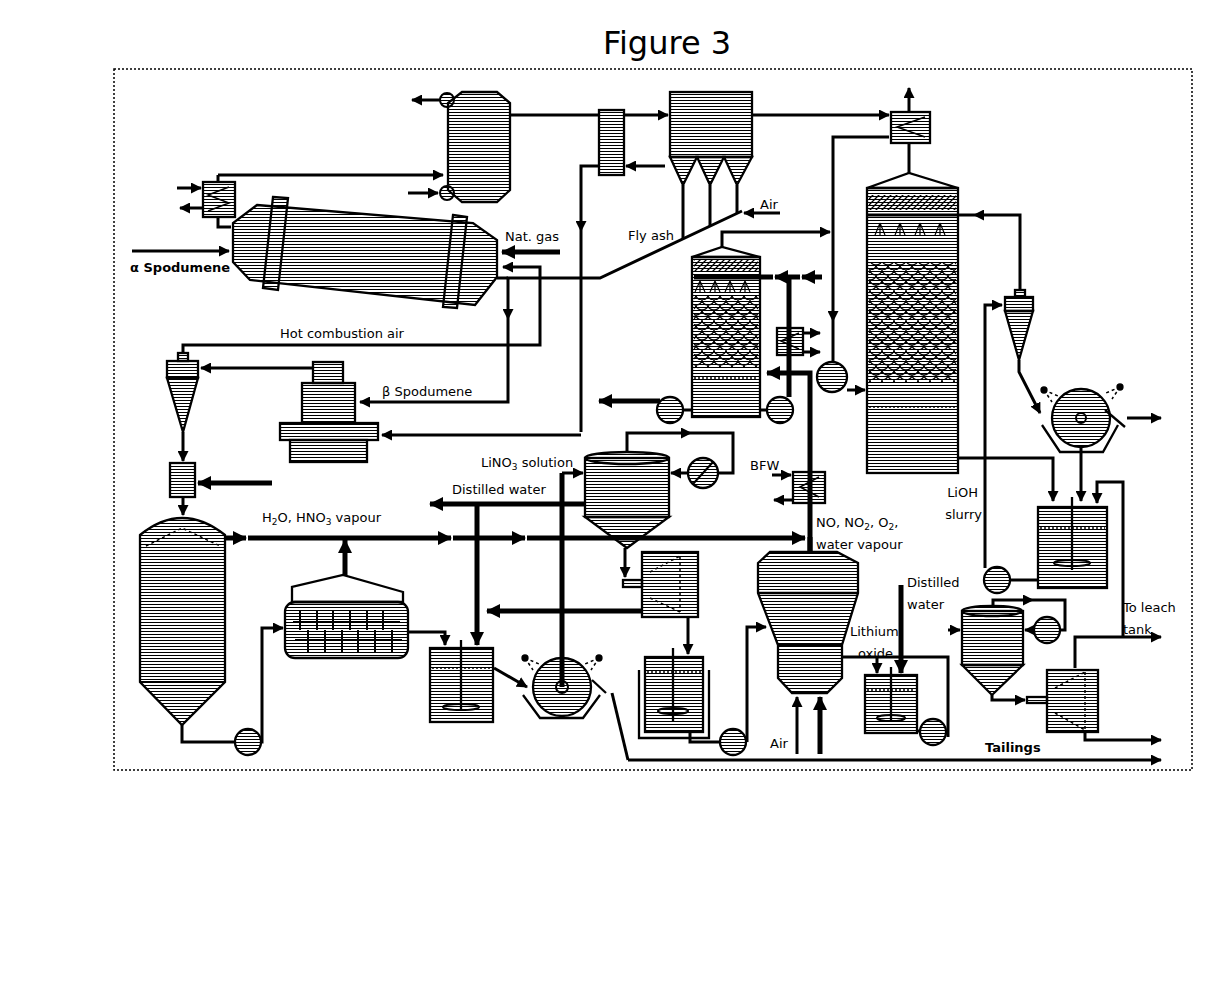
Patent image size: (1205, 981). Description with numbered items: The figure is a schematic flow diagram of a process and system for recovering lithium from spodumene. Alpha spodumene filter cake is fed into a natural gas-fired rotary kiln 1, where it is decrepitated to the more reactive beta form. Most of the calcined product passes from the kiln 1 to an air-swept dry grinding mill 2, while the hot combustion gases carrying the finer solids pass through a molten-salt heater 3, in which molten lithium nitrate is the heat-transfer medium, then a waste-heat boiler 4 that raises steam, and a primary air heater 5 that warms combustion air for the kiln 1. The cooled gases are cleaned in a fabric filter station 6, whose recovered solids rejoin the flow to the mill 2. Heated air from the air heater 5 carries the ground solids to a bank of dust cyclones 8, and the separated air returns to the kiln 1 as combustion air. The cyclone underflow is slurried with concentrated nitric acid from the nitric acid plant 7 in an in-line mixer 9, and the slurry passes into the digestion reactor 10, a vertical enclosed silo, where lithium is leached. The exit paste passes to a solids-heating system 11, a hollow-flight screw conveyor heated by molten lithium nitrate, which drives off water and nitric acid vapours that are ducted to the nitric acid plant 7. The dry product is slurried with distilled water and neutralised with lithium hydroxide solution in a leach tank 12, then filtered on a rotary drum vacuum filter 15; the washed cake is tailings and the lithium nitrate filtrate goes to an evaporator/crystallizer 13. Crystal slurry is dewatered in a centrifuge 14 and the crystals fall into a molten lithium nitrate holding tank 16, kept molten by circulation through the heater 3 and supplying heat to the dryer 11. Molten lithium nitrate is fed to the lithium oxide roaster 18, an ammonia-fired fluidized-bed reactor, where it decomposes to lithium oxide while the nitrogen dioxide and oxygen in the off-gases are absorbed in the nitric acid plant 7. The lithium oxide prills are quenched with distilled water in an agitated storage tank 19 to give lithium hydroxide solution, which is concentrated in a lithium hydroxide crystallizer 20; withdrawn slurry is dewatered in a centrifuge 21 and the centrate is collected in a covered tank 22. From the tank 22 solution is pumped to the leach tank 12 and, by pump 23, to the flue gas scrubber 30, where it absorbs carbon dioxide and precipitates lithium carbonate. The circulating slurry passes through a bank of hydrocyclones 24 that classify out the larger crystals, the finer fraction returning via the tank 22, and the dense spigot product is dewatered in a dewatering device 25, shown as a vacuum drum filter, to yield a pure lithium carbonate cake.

The rotary kiln 1 is at (365, 252).
The air-swept dry grinding mill 2 is at (329, 412).
The molten-salt heater 3 is at (295, 177).
The waste-heat boiler 4 is at (436, 145).
The primary air heater 5 is at (598, 252).
The fabric filter station 6 is at (779, 138).
The nitric acid plant 7 is at (714, 327).
The dust cyclones 8 is at (240, 407).
The in-line mixer 9 is at (197, 482).
The digestion reactor 10 is at (211, 636).
The solids-heating system 11 is at (365, 665).
The mixing/leach tank 12 is at (474, 705).
The evaporator/crystallizer vessel 13 is at (659, 490).
The centrifuge 14 is at (592, 603).
The rotary drum vacuum filter 15 is at (575, 686).
The molten lithium nitrate holding tank 16 is at (694, 701).
The lithium oxide roaster 18 is at (808, 615).
The agitated storage tank 19 is at (888, 709).
The lithium hydroxide crystallizer 20 is at (1004, 667).
The centrifuge 21 is at (1103, 696).
The covered tank 22 is at (1102, 559).
The pump 23 is at (1009, 558).
The hydrocyclones 24 is at (1037, 333).
The dewatering device 25 is at (1113, 422).
The flue gas scrubber 30 is at (965, 294).